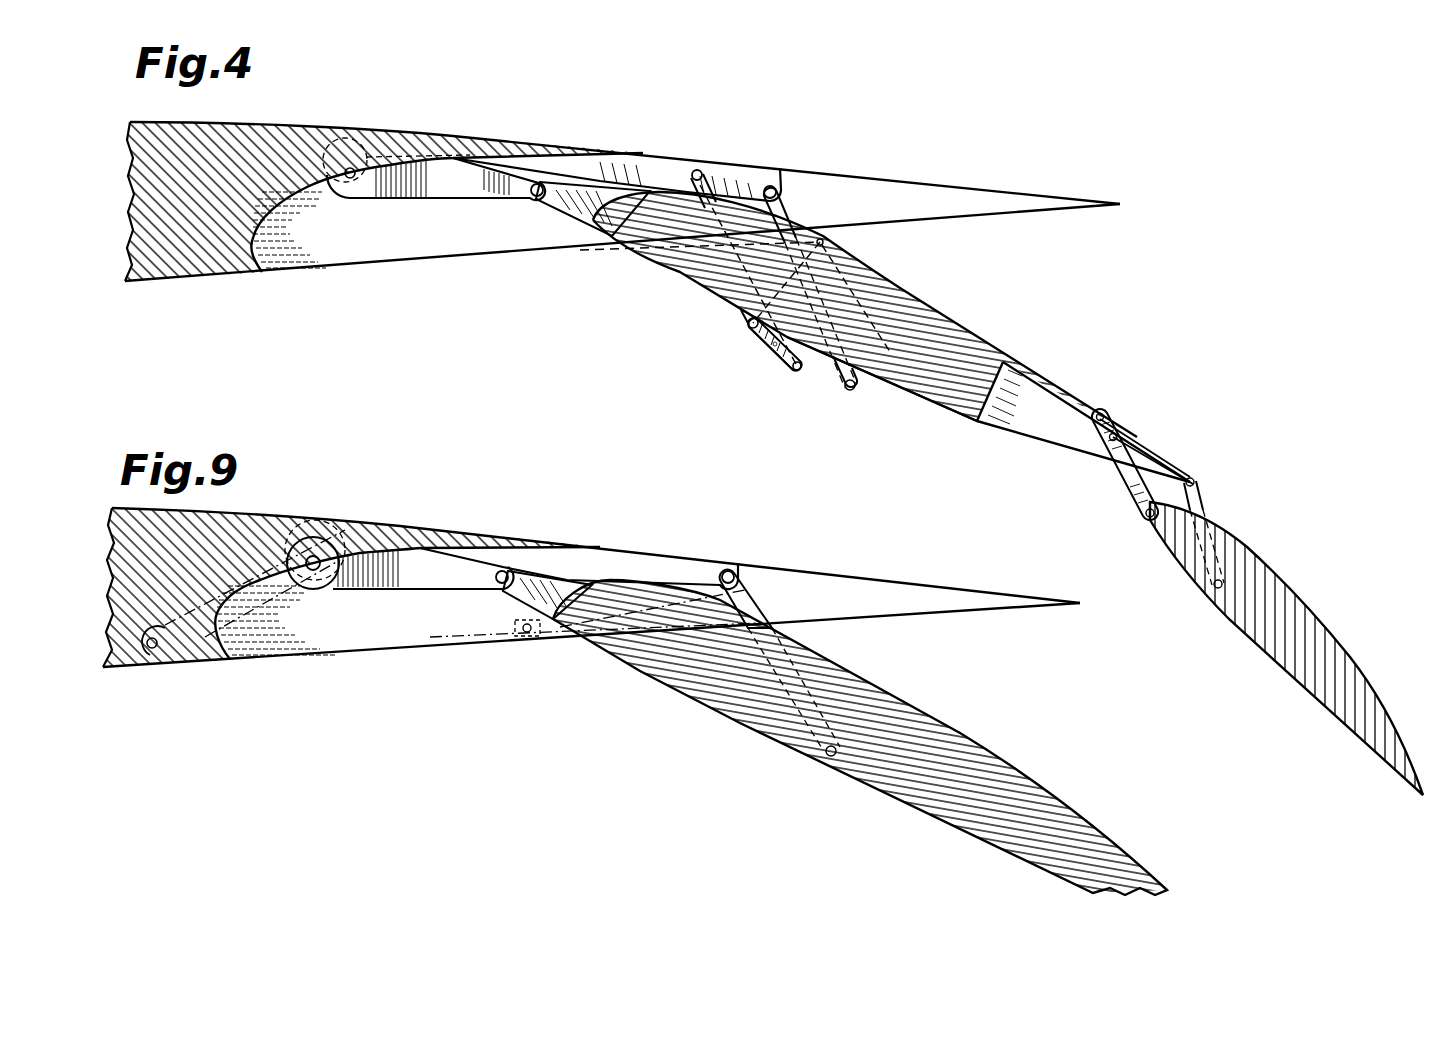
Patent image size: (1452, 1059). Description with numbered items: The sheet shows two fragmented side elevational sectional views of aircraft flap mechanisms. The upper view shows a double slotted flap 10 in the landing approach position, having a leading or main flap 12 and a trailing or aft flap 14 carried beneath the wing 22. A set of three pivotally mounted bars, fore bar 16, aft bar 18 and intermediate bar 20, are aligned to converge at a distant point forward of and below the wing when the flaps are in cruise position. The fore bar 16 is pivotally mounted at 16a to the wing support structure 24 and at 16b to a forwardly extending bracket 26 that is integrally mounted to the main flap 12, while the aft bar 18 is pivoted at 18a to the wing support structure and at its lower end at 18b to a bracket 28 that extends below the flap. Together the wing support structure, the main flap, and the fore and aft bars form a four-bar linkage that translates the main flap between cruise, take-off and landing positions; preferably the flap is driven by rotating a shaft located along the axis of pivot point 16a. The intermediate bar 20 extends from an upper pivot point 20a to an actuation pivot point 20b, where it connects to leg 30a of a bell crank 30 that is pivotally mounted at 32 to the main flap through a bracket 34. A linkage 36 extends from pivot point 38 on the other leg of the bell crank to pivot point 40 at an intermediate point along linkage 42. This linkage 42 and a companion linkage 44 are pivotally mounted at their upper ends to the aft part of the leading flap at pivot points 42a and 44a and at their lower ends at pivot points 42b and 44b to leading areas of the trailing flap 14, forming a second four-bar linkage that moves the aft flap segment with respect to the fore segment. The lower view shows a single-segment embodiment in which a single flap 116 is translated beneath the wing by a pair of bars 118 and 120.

In FIG. 4, the double slotted flap 10 is at (945, 276).
In FIG. 4, the main flap 12 is at (973, 318).
In FIG. 4, the trailing flap 14 is at (1297, 608).
In FIG. 4, the fore bar 16 is at (436, 200).
In FIG. 4, the pivot point 16a is at (352, 140).
In FIG. 4, the pivot point 16b is at (537, 203).
In FIG. 4, the aft bar 18 is at (787, 207).
In FIG. 4, the pivot point 18a is at (775, 184).
In FIG. 4, the pivot point 18b is at (851, 392).
In FIG. 4, the intermediate bar 20 is at (744, 270).
In FIG. 4, the upper pivot point 20a is at (700, 170).
In FIG. 4, the actuation pivot point 20b is at (794, 374).
In FIG. 4, the wing 22 is at (265, 128).
In FIG. 4, the wing support structure 24 is at (653, 170).
In FIG. 4, the bracket 26 is at (582, 222).
In FIG. 4, the bracket 28 is at (873, 381).
In FIG. 4, the bell crank 30 is at (752, 352).
In FIG. 4, the leg of bell crank 30a is at (764, 362).
In FIG. 4, the pivot 32 is at (767, 335).
In FIG. 4, the bracket 34 is at (742, 318).
In FIG. 4, the linkage 36 is at (1038, 397).
In FIG. 4, the pivot point 38 is at (830, 242).
In FIG. 4, the pivot point 40 is at (1125, 437).
In FIG. 4, the linkage 42 is at (1128, 470).
In FIG. 4, the pivot point 42a is at (1106, 415).
In FIG. 4, the pivot point 42b is at (1146, 517).
In FIG. 4, the linkage 44 is at (1200, 496).
In FIG. 4, the pivot point 44a is at (1195, 480).
In FIG. 4, the pivot point 44b is at (1216, 590).
In FIG. 9, the single flap 116 is at (893, 710).
In FIG. 9, the bar 118 is at (405, 558).
In FIG. 9, the bar 120 is at (677, 582).